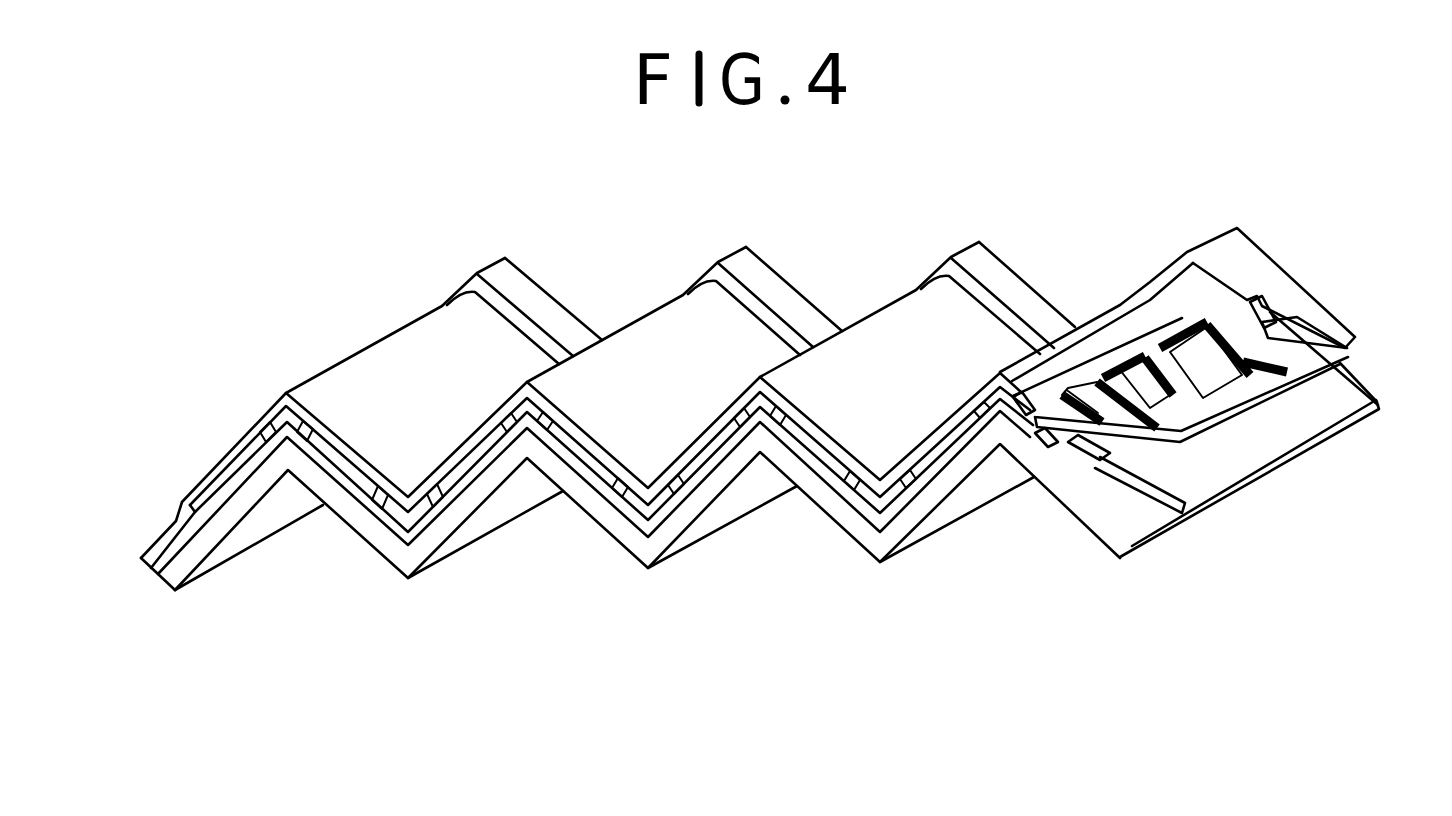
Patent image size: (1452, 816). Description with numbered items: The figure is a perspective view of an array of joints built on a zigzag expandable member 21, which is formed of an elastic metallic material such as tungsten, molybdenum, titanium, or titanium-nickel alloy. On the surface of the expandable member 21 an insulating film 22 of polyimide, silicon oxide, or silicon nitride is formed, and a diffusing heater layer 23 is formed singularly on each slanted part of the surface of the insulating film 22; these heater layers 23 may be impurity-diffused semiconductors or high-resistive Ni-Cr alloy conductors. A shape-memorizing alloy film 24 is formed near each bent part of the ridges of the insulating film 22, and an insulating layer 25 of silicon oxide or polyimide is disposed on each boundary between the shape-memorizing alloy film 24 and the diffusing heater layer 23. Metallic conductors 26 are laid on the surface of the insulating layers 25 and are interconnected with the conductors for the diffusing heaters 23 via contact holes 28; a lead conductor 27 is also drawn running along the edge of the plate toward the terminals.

The zigzag expandable member 21 is at (503, 517).
The insulating film 22 is at (1207, 467).
The diffusing heater layer 23 is at (1233, 398).
The shape-memorizing alloy film 24 is at (1119, 340).
The insulating layer 25 is at (1082, 375).
The metallic conductor 26 is at (1003, 285).
The lead conductor 27 is at (1358, 428).
The contact hole 28 is at (1268, 315).